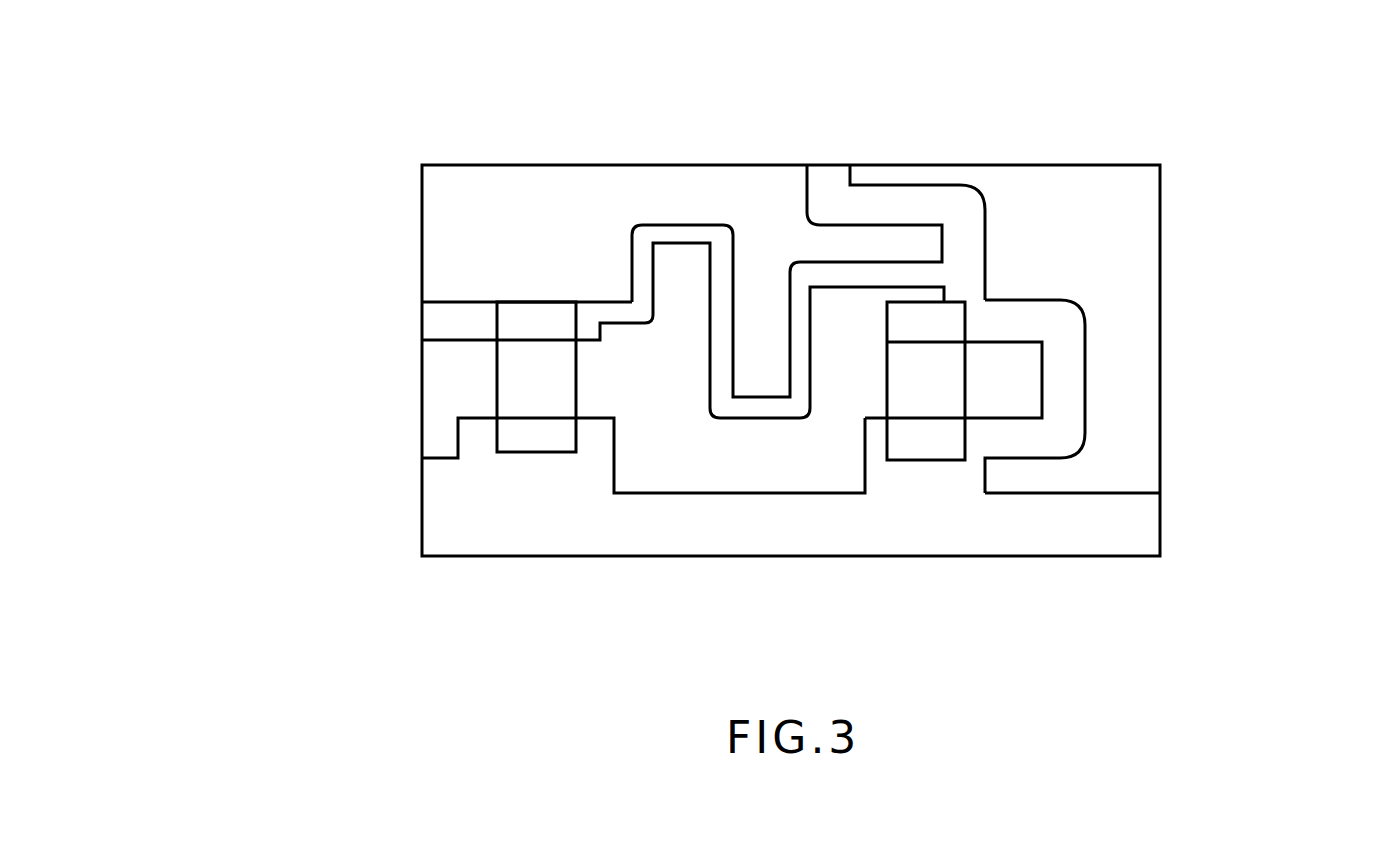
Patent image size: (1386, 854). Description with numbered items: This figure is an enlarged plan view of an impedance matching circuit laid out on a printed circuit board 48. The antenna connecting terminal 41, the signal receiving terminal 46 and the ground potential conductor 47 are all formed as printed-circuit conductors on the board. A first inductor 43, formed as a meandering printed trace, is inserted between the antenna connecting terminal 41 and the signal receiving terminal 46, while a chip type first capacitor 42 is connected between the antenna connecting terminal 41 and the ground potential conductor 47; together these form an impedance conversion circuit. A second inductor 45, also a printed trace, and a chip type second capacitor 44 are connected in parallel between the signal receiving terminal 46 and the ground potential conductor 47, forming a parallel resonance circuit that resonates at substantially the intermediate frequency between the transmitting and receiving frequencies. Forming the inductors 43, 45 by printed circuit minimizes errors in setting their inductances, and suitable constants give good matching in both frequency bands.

The antenna connecting terminal 41 is at (422, 323).
The first capacitor 42 is at (576, 388).
The first inductor 43 is at (632, 249).
The second capacitor 44 is at (887, 392).
The second inductor 45 is at (1085, 355).
The signal receiving terminal 46 is at (822, 185).
The ground potential conductor 47 is at (548, 556).
The printed circuit board 48 is at (452, 165).